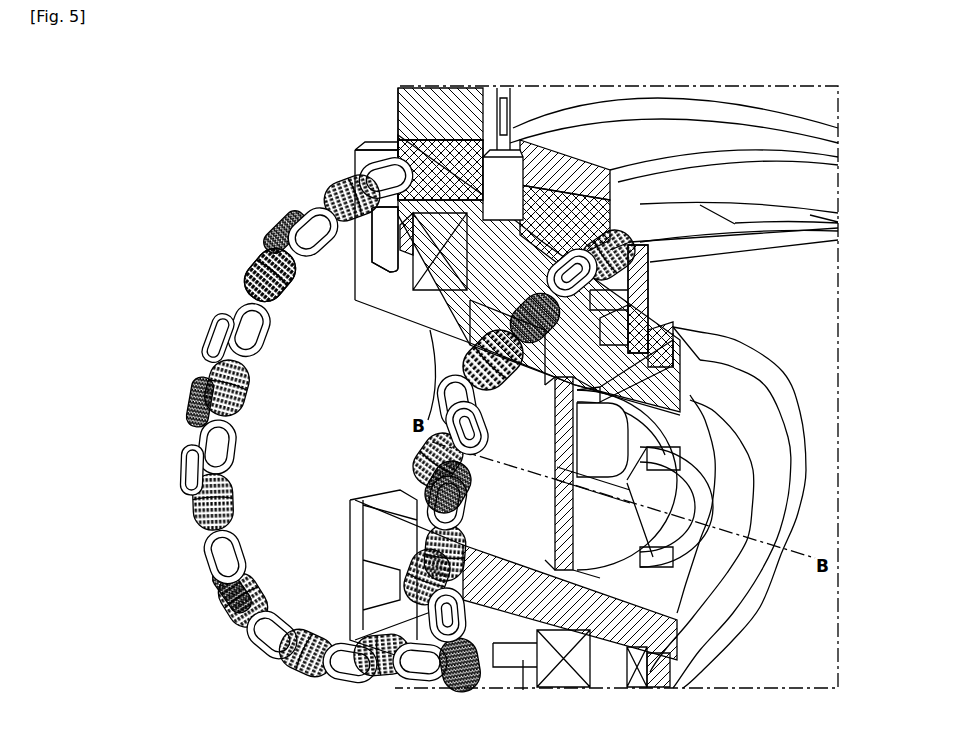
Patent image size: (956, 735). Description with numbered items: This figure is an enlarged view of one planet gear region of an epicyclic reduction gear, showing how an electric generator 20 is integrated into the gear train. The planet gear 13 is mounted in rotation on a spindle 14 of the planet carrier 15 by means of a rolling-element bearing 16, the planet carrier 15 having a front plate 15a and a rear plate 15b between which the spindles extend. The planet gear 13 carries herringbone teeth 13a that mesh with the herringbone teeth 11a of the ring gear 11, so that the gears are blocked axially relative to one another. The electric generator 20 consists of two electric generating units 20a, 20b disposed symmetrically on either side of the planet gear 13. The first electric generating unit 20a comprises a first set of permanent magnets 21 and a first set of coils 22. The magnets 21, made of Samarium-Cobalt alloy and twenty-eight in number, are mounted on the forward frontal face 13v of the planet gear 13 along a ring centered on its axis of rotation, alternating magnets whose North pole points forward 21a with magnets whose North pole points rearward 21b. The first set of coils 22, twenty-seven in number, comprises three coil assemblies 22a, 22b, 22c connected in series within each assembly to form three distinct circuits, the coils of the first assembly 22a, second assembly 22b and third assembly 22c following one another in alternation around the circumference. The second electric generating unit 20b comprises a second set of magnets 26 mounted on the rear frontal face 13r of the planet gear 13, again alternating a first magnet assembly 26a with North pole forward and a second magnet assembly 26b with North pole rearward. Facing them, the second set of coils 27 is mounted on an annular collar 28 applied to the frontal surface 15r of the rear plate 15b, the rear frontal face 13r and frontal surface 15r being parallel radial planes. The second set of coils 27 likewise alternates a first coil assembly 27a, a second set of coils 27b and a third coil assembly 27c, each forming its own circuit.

The ring gear 11 is at (575, 172).
The herringbone teeth 11a is at (582, 208).
The planet gear 13 is at (540, 222).
The herringbone teeth 13a is at (606, 196).
The rear frontal face 13r is at (610, 238).
The forward frontal face 13v is at (383, 239).
The spindle 14 is at (665, 385).
The planet carrier 15 is at (763, 250).
The front plate 15a is at (372, 150).
The rear plate 15b is at (640, 300).
The frontal surface 15r is at (622, 326).
The rolling-element bearing 16 is at (430, 272).
The electric generator 20 is at (341, 409).
The first electric generating unit 20a is at (270, 216).
The second electric generating unit 20b is at (422, 660).
The first set of permanent magnets 21 is at (300, 322).
The magnets whose North pole points forward 21a is at (254, 322).
The magnets whose North pole points rearward 21b is at (240, 386).
The first set of coils 22 is at (167, 310).
The first coil assembly 22a is at (213, 346).
The second coil assembly 22b is at (194, 414).
The third coil assembly 22c is at (184, 478).
The second set of magnets 26 is at (352, 458).
The first magnet assembly 26a is at (452, 396).
The second magnet assembly 26b is at (426, 470).
The second set of coils 27 is at (513, 407).
The first coil assembly 27a is at (484, 427).
The second set of coils 27b is at (476, 442).
The third coil assembly 27c is at (464, 479).
The annular collar 28 is at (632, 268).